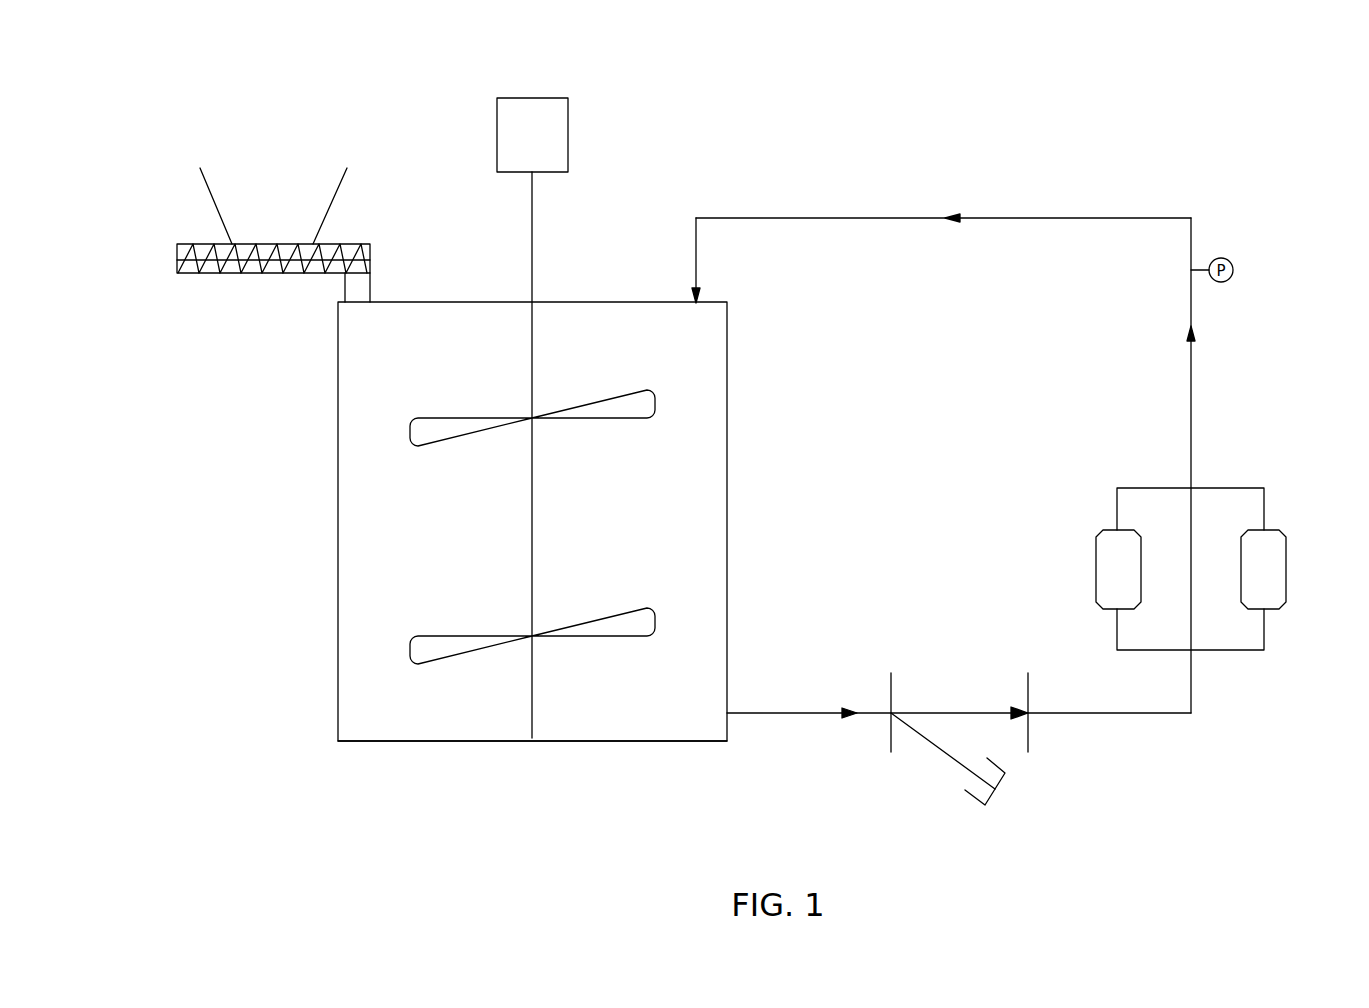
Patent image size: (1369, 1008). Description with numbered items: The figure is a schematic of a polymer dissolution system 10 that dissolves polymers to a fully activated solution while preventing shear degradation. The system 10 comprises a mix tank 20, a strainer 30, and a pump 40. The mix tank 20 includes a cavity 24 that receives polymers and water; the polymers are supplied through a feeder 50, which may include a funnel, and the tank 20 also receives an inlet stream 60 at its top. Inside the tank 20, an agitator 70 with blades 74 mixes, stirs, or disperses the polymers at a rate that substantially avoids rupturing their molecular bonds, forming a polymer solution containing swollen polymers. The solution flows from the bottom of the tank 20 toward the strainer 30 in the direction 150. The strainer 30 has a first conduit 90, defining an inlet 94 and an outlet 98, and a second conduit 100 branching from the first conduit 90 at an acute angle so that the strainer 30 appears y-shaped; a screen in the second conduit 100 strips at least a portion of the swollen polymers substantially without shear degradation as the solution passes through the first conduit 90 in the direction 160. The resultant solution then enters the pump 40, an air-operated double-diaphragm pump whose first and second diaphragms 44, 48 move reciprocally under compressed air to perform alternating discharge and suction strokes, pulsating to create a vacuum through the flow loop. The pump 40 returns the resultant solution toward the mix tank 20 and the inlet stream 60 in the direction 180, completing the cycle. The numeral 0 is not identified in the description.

The polymer dissolution system 10 is at (735, 40).
The mix tank 20 is at (514, 521).
The cavity 24 is at (532, 716).
The strainer 30 is at (968, 800).
The pump 40 is at (1192, 530).
The first diaphragm 44 is at (1096, 571).
The second diaphragm 48 is at (1284, 571).
The feeder 50 is at (273, 194).
The inlet stream 60 is at (710, 235).
The agitator 70 is at (532, 389).
The blades 74 is at (544, 502).
The first conduit 90 is at (959, 687).
The inlet 94 is at (867, 707).
The outlet 98 is at (1046, 707).
The second conduit 100 is at (934, 751).
The direction 150 is at (822, 731).
The direction 160 is at (1008, 687).
The direction 180 is at (943, 194).
The strainer cap 0 is at (960, 762).